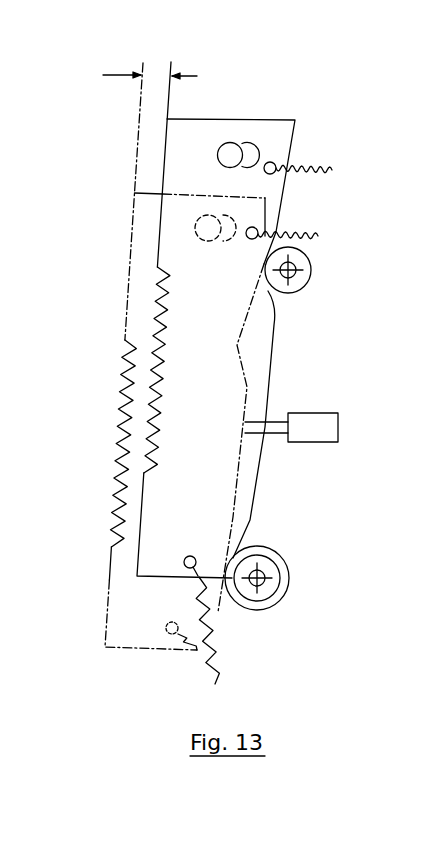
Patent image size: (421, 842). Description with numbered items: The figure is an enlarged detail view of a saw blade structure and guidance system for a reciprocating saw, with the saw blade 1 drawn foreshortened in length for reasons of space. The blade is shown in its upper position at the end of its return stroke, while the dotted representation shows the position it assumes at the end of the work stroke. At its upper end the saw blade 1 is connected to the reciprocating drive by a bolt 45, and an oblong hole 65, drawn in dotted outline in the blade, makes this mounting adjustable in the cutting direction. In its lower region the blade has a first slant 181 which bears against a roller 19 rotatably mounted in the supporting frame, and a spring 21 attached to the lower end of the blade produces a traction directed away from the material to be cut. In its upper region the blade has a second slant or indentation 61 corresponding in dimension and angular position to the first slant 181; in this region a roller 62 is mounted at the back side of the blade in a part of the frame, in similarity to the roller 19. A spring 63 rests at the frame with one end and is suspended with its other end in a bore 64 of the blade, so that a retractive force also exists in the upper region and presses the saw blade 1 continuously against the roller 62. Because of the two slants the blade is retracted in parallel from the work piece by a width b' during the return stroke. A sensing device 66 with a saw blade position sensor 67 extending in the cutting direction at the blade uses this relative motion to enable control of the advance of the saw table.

The saw blade 1 is at (190, 256).
The bolt 45 is at (233, 156).
The oblong hole 65 is at (256, 148).
The bore 64 is at (277, 164).
The spring 63 is at (332, 170).
The second slant or indentation 61 is at (278, 225).
The roller 62 is at (312, 278).
The first slant 181 is at (252, 522).
The saw blade position sensor 67 is at (276, 426).
The sensing device 66 is at (322, 412).
The roller 19 is at (291, 577).
The spring 21 is at (214, 644).